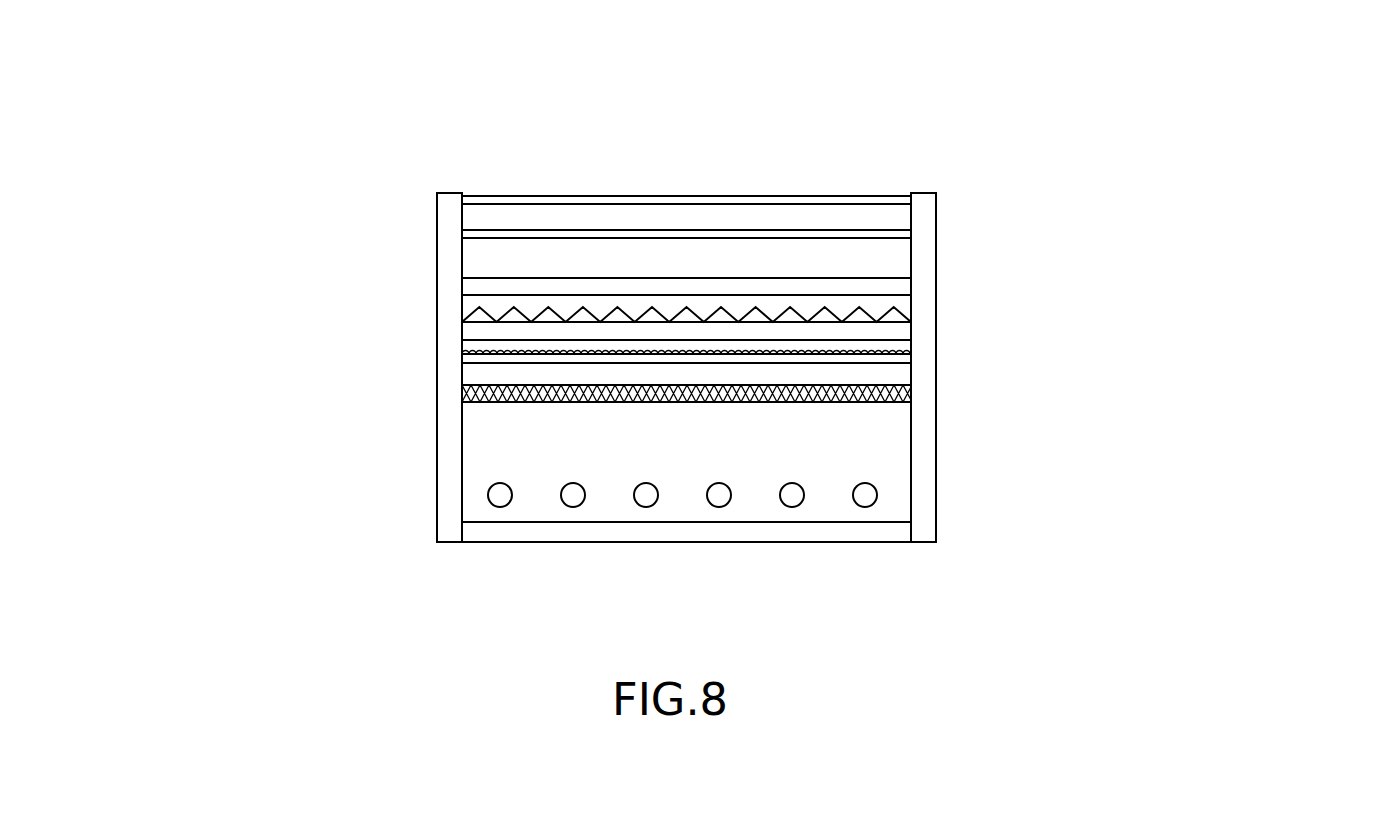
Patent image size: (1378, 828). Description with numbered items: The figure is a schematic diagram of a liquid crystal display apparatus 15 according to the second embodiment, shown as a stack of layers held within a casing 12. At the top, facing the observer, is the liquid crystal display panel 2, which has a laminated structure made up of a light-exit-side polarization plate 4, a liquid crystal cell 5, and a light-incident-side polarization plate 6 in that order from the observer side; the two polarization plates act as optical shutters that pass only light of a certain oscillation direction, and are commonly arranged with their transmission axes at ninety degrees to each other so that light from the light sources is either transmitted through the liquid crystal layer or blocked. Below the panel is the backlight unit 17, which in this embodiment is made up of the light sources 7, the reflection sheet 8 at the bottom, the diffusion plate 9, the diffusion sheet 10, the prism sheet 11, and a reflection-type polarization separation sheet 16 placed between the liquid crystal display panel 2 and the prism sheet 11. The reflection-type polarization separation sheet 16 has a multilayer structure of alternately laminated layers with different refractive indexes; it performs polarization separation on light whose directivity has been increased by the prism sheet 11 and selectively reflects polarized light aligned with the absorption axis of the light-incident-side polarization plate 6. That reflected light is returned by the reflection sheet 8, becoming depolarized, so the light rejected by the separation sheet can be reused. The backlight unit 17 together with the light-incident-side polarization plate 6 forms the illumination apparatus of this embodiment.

The liquid crystal display apparatus 15 is at (446, 55).
The liquid crystal display panel 2 is at (525, 188).
The backlight unit 17 is at (781, 395).
The light-exit-side polarization plate 4 is at (812, 197).
The liquid crystal cell 5 is at (883, 217).
The light-incident-side polarization plate 6 is at (878, 239).
The reflection-type polarization separation sheet 16 is at (905, 287).
The prism sheet 11 is at (897, 333).
The diffusion sheet 10 is at (898, 360).
The diffusion plate 9 is at (910, 397).
The light sources 7 is at (866, 490).
The casing 12 is at (925, 520).
The reflection sheet 8 is at (785, 542).